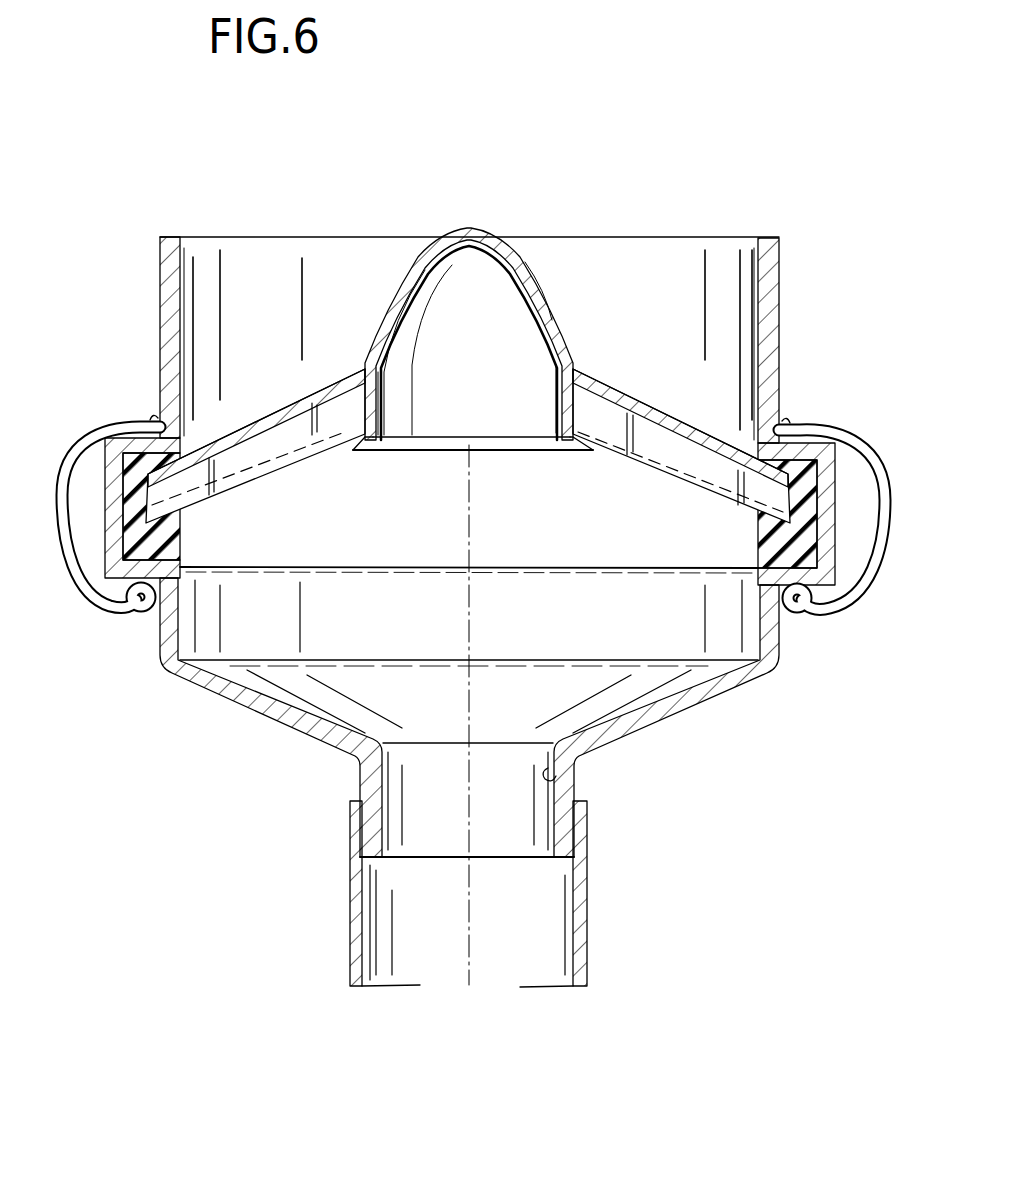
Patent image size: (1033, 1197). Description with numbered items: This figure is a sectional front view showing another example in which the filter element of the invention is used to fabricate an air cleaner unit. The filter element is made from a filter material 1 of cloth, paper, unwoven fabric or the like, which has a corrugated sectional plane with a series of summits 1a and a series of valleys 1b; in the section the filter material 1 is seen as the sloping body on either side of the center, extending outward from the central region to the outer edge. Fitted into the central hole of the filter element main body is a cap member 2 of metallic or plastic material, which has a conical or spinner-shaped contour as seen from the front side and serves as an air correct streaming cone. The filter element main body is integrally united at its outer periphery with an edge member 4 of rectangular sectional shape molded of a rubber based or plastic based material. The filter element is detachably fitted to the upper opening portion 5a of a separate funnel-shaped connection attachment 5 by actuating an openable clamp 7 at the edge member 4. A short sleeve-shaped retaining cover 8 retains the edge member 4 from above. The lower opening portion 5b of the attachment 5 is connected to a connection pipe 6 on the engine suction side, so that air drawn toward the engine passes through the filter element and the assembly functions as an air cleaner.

The filter material 1 is at (628, 392).
The summits 1a is at (262, 418).
The valleys 1b is at (259, 468).
The cap member 2 is at (482, 232).
The edge member 4 is at (806, 565).
The funnel-shaped connection attachment 5 is at (655, 722).
The upper opening portion 5a is at (836, 535).
The lower opening portion 5b is at (552, 778).
The connection pipe 6 is at (590, 940).
The openable clamp 7 is at (98, 420).
The short sleeve-shaped retaining cover 8 is at (782, 318).